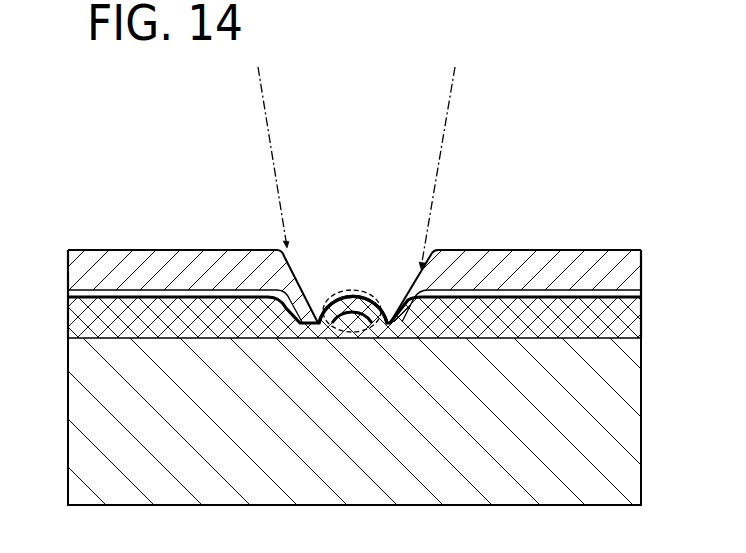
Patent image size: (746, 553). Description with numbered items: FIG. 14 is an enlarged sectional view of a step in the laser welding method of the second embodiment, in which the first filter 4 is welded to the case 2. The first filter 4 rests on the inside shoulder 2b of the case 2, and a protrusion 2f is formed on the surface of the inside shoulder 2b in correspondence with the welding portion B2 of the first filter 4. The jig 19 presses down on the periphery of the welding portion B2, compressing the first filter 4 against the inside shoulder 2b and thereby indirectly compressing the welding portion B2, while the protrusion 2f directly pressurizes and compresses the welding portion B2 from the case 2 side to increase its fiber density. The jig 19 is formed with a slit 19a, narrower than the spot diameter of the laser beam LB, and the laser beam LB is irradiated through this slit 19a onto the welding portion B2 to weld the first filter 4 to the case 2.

The case 2 is at (635, 398).
The inside shoulder 2b is at (639, 327).
The protrusion 2f is at (362, 285).
The first filter 4 is at (67, 317).
The jig 19 is at (637, 282).
The slit 19a is at (390, 320).
The welding portion B2 is at (338, 290).
The laser beam LB is at (445, 123).